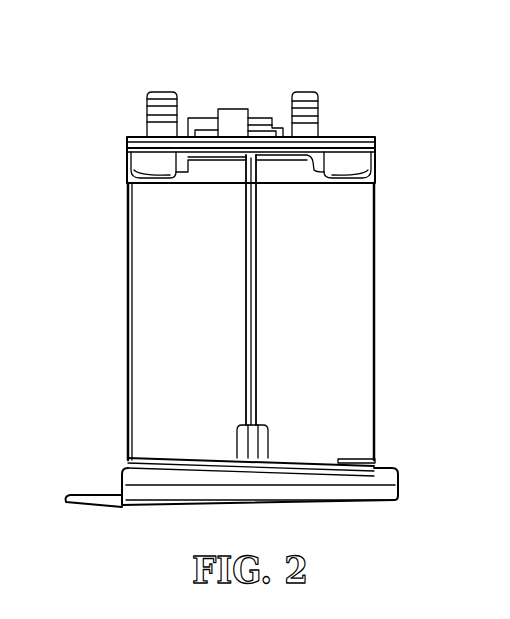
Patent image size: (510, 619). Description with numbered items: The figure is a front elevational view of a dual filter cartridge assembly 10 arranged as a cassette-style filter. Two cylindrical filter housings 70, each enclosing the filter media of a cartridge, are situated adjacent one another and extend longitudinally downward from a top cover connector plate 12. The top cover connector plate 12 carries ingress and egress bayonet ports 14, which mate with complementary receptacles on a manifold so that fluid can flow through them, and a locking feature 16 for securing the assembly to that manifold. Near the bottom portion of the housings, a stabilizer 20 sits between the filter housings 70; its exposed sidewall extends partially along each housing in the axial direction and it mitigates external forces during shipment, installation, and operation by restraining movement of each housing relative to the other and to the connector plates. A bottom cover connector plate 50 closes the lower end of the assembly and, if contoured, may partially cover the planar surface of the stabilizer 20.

The filter cartridge assembly 10 is at (405, 200).
The top cover connector plate 12 is at (357, 157).
The ingress and egress bayonet ports 14 is at (163, 92).
The locking feature 16 is at (210, 120).
The stabilizer 20 is at (260, 444).
The bottom cover connector plate 50 is at (303, 488).
The filter housings 70 is at (167, 285).